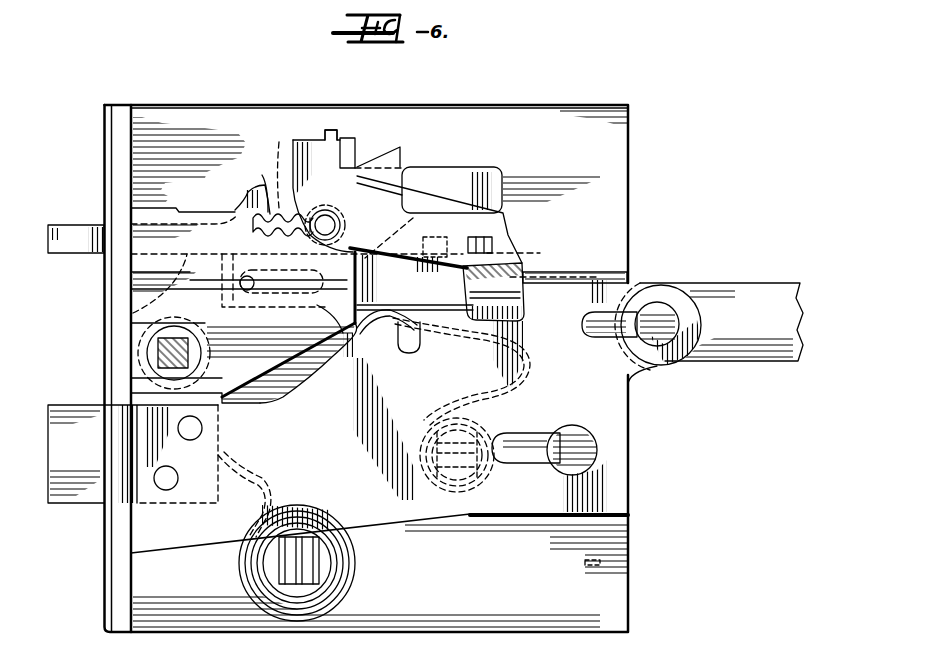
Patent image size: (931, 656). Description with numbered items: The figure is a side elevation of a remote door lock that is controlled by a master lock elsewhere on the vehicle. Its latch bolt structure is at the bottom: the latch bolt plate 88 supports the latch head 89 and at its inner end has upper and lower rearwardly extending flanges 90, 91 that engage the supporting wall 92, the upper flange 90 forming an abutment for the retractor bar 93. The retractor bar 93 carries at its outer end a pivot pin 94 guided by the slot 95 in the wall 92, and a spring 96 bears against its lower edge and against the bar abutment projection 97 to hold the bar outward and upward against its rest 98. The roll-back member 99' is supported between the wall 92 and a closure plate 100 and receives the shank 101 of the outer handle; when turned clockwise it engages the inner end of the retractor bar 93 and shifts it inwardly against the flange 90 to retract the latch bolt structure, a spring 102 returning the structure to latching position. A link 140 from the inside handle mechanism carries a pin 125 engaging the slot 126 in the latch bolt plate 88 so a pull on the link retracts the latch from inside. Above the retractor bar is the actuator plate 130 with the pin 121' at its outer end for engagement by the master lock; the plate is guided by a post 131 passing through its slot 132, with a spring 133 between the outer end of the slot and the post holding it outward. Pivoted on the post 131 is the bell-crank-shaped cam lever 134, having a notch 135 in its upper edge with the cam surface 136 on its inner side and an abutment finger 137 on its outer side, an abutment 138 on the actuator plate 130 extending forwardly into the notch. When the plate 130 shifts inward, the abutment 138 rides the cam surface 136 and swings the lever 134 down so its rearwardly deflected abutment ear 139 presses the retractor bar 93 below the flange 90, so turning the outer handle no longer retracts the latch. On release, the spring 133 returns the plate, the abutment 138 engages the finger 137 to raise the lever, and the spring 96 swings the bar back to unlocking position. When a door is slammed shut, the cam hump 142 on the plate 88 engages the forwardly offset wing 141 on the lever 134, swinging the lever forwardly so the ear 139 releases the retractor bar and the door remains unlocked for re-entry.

The latch bolt plate 88 is at (411, 520).
The latch head 89 is at (66, 413).
The upper flange 90 is at (572, 275).
The lower flange 91 is at (512, 508).
The supporting wall 92 is at (520, 615).
The retractor bar 93 is at (397, 300).
The pivot pin 94 is at (247, 300).
The slot 95 is at (297, 292).
The spring 96 is at (512, 400).
The bar abutment projection 97 is at (360, 295).
The rest 98 is at (428, 272).
The roll-back member 99' is at (135, 321).
The closure plate 100 is at (133, 267).
The shank 101 is at (160, 347).
The spring 102 is at (292, 622).
The pin 121' is at (75, 224).
The pin 125 is at (650, 313).
The slot 126 is at (613, 307).
The actuator plate 130 is at (245, 195).
The post 131 is at (360, 195).
The slot 132 is at (263, 180).
The spring 133 is at (287, 150).
The cam lever 134 is at (377, 197).
The notch 135 is at (417, 197).
The cam surface 136 is at (380, 150).
The abutment finger 137 is at (357, 87).
The abutment 138 is at (347, 152).
The abutment ear 139 is at (490, 242).
The link 140 is at (793, 283).
The wing 141 is at (503, 297).
The cam hump 142 is at (418, 353).